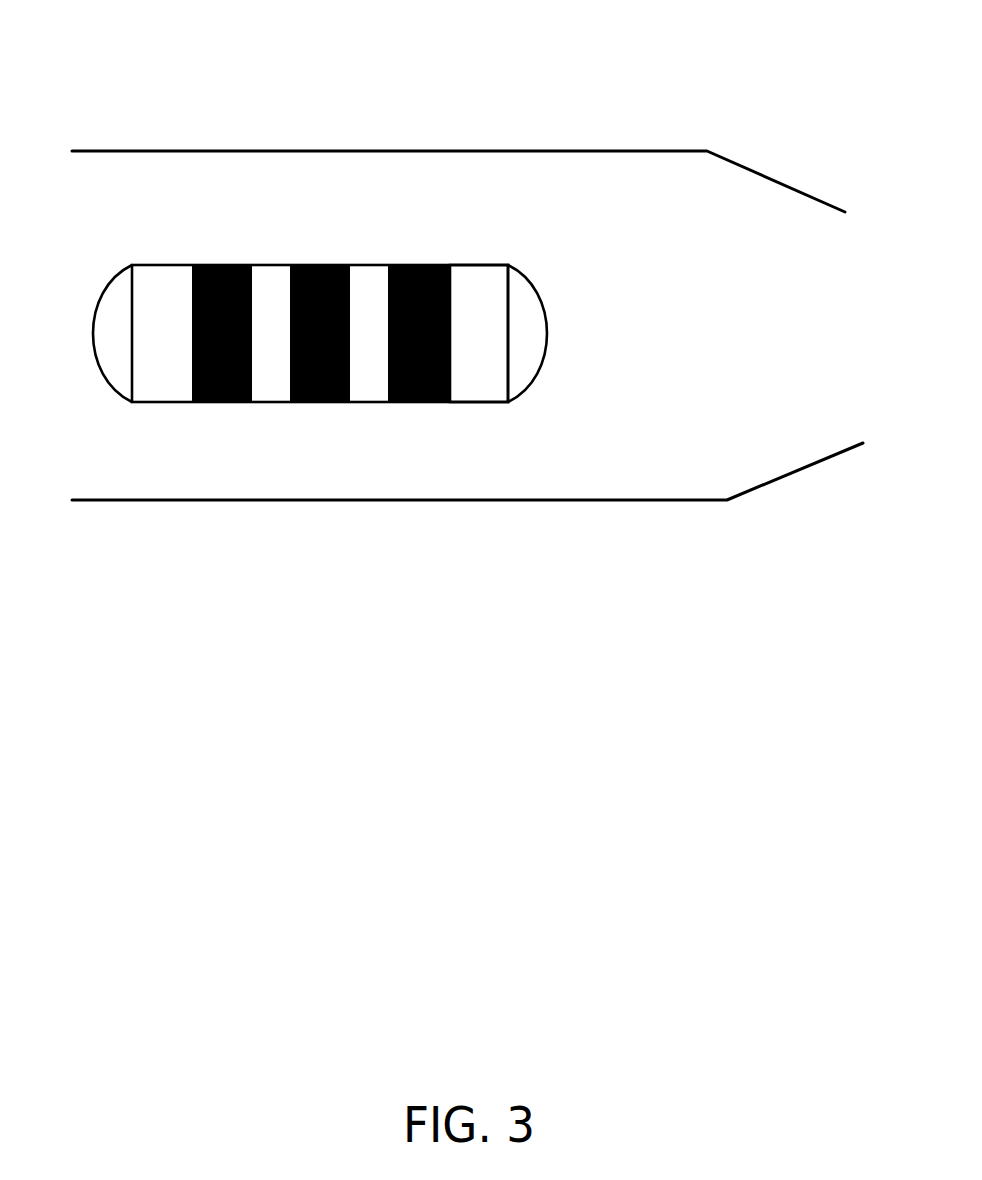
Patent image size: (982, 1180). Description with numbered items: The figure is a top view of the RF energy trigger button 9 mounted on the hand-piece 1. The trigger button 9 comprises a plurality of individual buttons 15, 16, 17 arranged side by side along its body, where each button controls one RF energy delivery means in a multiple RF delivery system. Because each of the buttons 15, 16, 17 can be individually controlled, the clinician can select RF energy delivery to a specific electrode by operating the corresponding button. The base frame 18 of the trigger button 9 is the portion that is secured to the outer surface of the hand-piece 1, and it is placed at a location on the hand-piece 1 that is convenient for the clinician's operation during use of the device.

The hand-piece 1 is at (152, 151).
The RF energy trigger button 9 is at (533, 265).
The button 15 is at (423, 265).
The button 16 is at (320, 265).
The button 17 is at (223, 265).
The base frame 18 is at (483, 385).